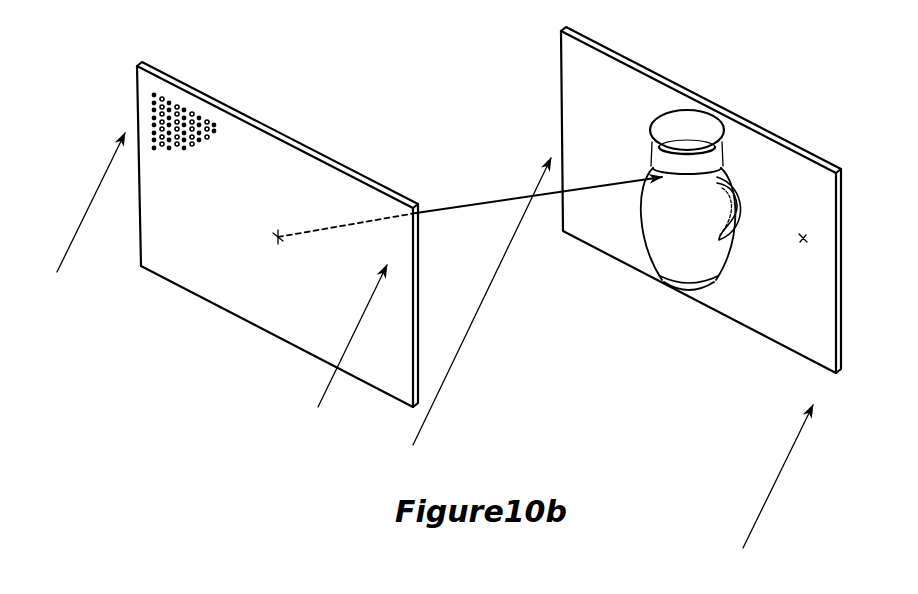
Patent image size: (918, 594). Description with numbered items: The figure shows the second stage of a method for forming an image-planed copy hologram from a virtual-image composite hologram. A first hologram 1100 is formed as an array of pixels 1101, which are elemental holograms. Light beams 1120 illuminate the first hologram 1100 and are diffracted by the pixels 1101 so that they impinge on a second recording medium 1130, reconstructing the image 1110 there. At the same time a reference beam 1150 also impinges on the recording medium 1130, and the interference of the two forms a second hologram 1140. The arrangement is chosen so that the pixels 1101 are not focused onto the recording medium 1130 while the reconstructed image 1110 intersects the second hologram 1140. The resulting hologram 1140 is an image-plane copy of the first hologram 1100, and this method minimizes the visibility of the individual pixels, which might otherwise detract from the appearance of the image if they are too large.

The first hologram 1100 is at (200, 294).
The pixels 1101 is at (203, 123).
The image 1110 is at (712, 178).
The light beams 1120 is at (83, 218).
The recording medium 1130 is at (622, 58).
The second hologram 1140 is at (803, 238).
The reference beam 1150 is at (478, 313).